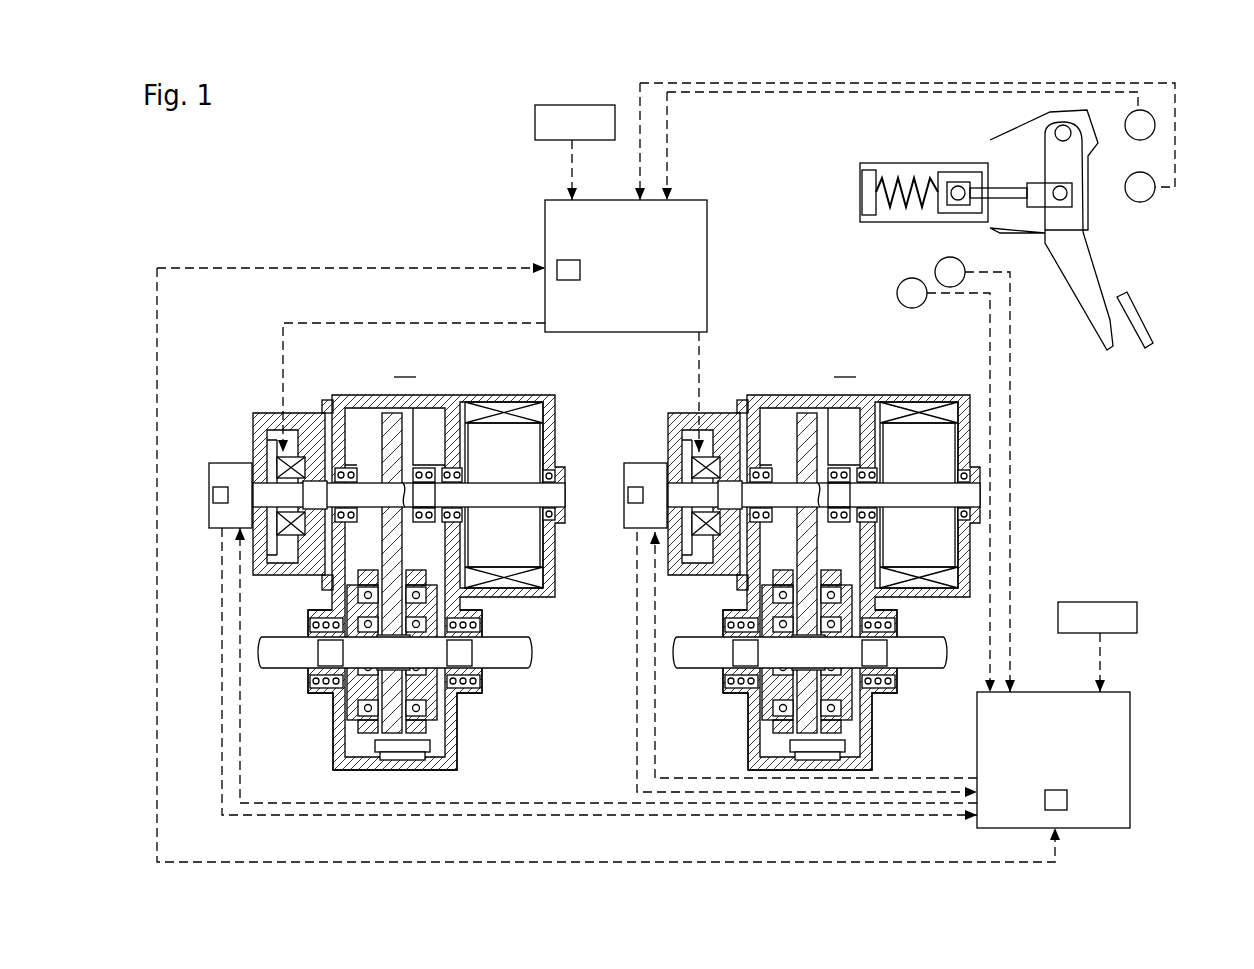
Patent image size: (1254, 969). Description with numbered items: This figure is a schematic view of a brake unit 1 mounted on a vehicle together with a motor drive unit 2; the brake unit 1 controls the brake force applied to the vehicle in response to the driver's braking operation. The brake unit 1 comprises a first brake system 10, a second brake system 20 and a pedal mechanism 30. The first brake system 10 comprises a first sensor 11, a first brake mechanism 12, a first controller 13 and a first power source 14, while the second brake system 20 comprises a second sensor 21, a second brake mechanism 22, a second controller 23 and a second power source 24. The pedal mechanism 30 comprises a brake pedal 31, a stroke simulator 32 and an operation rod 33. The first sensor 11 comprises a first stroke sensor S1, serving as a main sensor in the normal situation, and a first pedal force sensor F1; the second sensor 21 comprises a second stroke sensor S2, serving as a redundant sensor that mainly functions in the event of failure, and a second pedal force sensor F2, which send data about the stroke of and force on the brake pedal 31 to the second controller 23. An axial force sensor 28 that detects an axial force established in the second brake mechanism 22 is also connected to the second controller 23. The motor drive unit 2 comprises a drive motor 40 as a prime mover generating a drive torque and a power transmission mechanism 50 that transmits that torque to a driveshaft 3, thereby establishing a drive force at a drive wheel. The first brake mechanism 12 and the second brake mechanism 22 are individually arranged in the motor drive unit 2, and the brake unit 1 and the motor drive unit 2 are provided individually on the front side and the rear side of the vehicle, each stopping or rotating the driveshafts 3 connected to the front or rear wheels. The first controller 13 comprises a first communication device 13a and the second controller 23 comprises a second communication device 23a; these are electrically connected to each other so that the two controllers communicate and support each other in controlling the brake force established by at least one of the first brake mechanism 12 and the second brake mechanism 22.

The brake unit 1 is at (235, 190).
The motor drive unit 2 is at (480, 385).
The driveshaft 3 is at (268, 660).
The first brake system 10 is at (547, 534).
The first sensor 11 is at (1025, 225).
The first brake mechanism 12 is at (263, 410).
The first controller 13 is at (600, 266).
The first communication device 13a is at (566, 281).
The first power source 14 is at (535, 126).
The second brake system 20 is at (391, 535).
The second sensor 21 is at (888, 250).
The second brake mechanism 22 is at (222, 540).
The second controller 23 is at (1087, 760).
The second communication device 23a is at (1068, 800).
The second power source 24 is at (1137, 618).
The axial force sensor 28 is at (217, 495).
The pedal mechanism 30 is at (1168, 322).
The brake pedal 31 is at (1105, 260).
The stroke simulator 32 is at (918, 148).
The operation rod 33 is at (1010, 197).
The drive motor 40 is at (530, 448).
The power transmission mechanism 50 is at (462, 725).
The first stroke sensor S1 is at (1070, 132).
The second stroke sensor S2 is at (955, 214).
The first pedal force sensor F1 is at (1065, 193).
The second pedal force sensor F2 is at (868, 193).